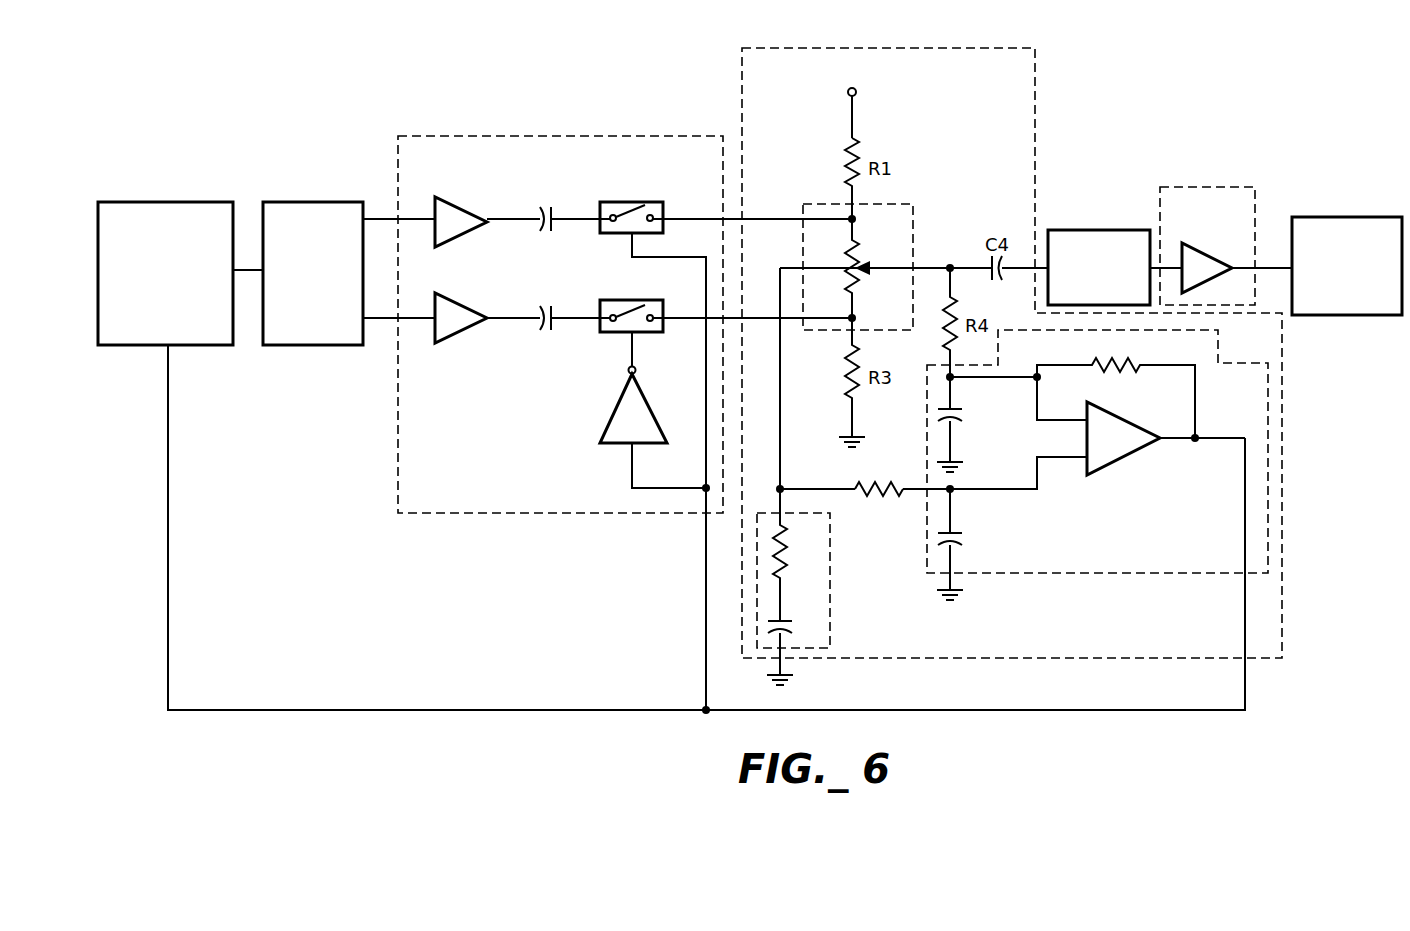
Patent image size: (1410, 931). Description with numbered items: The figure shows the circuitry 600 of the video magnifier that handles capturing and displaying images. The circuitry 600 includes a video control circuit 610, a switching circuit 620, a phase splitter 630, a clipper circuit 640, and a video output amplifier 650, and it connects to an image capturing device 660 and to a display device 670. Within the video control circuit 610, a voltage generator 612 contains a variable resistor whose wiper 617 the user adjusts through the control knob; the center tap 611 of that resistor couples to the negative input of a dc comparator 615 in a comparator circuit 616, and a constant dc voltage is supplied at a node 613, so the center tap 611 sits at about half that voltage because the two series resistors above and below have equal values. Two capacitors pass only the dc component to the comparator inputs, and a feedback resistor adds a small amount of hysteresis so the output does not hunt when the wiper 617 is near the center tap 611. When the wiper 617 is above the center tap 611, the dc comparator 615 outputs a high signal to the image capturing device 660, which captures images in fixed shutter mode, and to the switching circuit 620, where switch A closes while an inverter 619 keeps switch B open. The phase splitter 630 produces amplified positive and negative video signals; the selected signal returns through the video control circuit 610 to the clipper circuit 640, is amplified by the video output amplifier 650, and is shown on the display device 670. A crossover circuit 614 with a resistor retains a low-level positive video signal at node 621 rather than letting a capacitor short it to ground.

The circuitry 600 is at (346, 68).
The video control circuit 610 is at (742, 68).
The center tap 611 is at (848, 264).
The voltage generator 612 is at (838, 204).
The node 613 is at (856, 94).
The crossover circuit 614 is at (832, 603).
The dc comparator 615 is at (1166, 438).
The comparator circuit 616 is at (1061, 468).
The wiper 617 is at (891, 268).
The inverter 619 is at (597, 405).
The switching circuit 620 is at (560, 344).
The node 621 is at (785, 486).
The phase splitter 630 is at (313, 273).
The clipper circuit 640 is at (1099, 267).
The video output amplifier 650 is at (1207, 246).
The image capturing device 660 is at (165, 273).
The display device 670 is at (1347, 266).